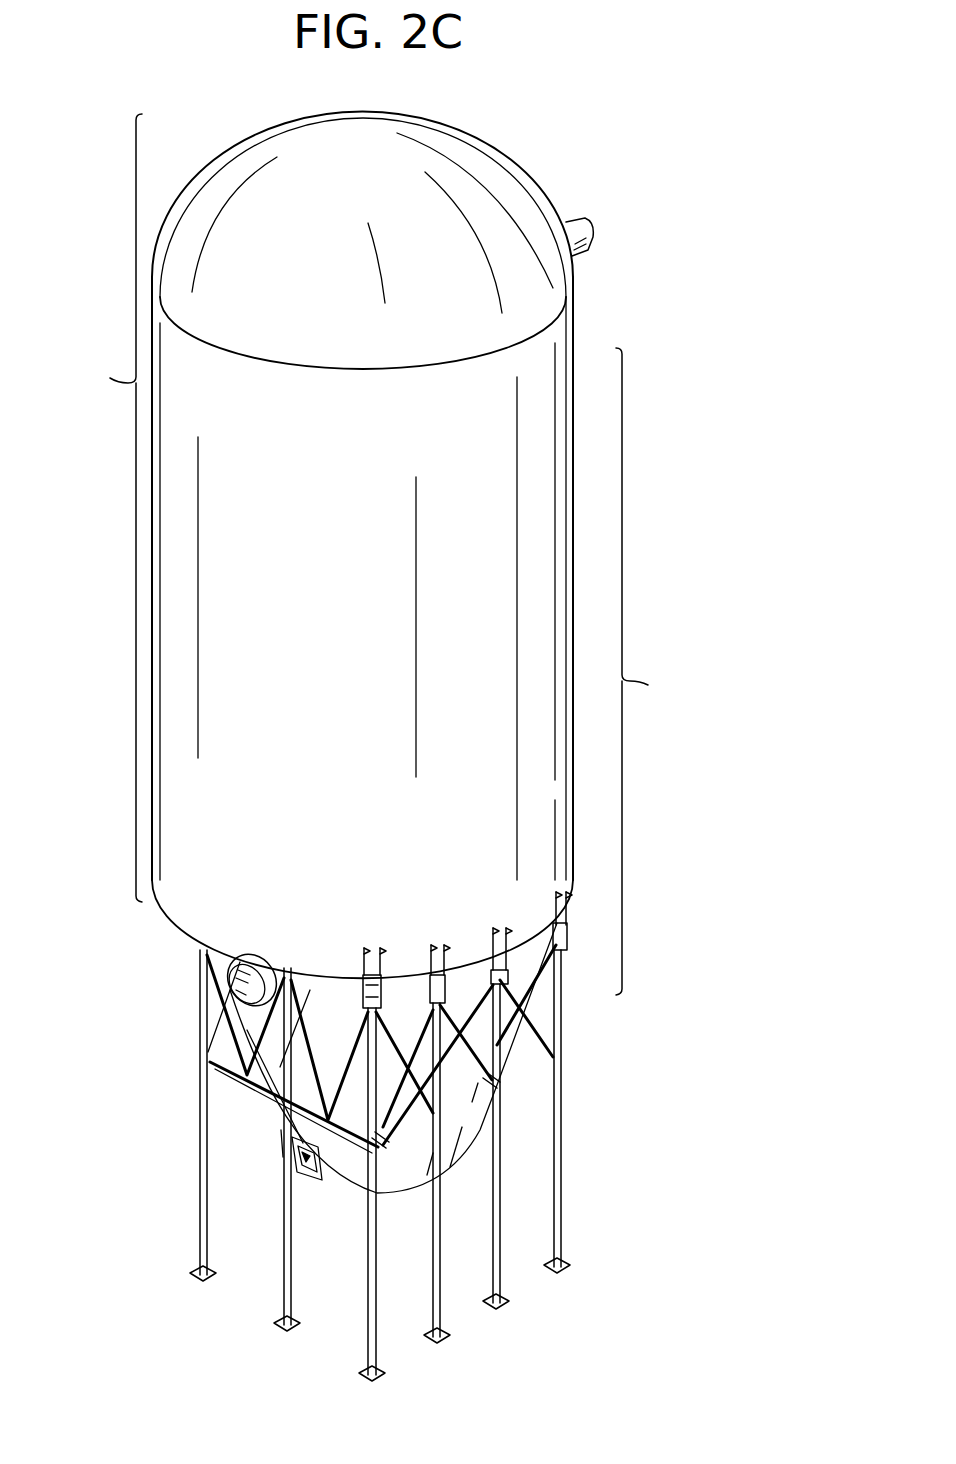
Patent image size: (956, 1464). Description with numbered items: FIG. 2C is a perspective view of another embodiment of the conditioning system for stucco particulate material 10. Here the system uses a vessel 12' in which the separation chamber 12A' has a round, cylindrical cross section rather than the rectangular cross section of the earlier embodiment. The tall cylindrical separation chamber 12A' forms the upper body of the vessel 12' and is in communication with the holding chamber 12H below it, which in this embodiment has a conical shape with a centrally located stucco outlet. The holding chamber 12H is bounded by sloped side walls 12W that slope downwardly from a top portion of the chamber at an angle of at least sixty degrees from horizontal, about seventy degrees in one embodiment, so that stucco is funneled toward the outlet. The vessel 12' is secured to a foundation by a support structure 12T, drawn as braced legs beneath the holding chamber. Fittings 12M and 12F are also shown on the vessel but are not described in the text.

The conditioning system for stucco particulate material 10 is at (597, 339).
The separation chamber 12A' is at (110, 508).
The vessel 12' is at (644, 671).
The manway nozzle 12M is at (572, 218).
The flange fitting 12F is at (240, 983).
The holding chamber 12H is at (340, 1038).
The support structure 12T is at (490, 1083).
The sloped side walls 12W is at (395, 1053).